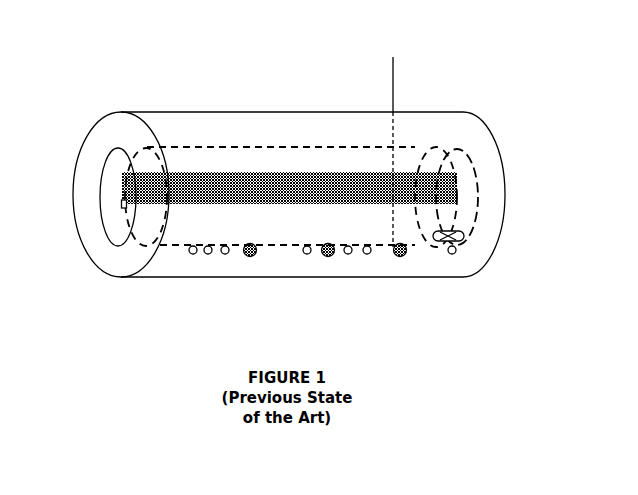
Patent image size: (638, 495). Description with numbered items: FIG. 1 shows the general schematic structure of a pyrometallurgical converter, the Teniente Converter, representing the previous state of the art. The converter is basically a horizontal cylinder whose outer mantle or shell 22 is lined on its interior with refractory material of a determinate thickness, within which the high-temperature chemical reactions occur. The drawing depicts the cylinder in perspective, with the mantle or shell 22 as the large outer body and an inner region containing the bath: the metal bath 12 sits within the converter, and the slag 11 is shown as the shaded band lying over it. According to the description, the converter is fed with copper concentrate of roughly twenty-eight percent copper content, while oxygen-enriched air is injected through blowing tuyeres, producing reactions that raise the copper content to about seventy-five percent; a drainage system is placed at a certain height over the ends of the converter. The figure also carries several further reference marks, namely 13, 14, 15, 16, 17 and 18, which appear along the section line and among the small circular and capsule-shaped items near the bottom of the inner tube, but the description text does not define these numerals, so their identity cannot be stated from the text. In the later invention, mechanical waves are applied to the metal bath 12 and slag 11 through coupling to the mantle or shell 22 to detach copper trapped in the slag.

The slag 11 is at (233, 172).
The metal bath 12 is at (194, 233).
The section line 13 is at (403, 82).
The filled particles 14 is at (253, 265).
The capsule element 15 is at (465, 225).
The open particle 16 is at (309, 265).
The open particles 17 is at (351, 265).
The end cap element 18 is at (115, 214).
The mantle or shell 22 is at (184, 110).